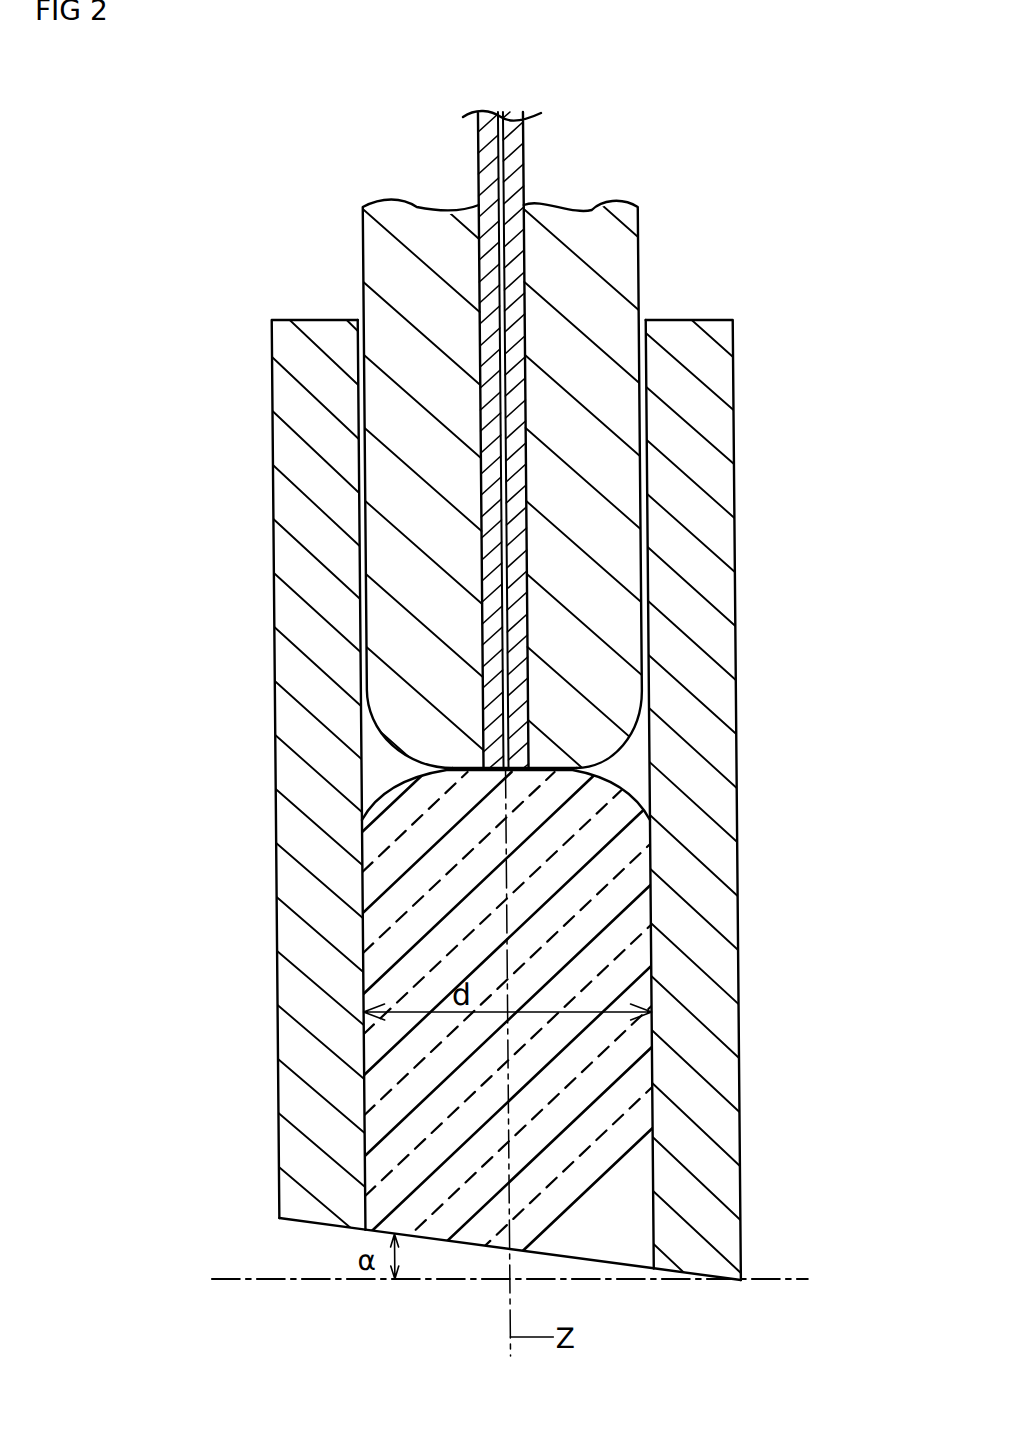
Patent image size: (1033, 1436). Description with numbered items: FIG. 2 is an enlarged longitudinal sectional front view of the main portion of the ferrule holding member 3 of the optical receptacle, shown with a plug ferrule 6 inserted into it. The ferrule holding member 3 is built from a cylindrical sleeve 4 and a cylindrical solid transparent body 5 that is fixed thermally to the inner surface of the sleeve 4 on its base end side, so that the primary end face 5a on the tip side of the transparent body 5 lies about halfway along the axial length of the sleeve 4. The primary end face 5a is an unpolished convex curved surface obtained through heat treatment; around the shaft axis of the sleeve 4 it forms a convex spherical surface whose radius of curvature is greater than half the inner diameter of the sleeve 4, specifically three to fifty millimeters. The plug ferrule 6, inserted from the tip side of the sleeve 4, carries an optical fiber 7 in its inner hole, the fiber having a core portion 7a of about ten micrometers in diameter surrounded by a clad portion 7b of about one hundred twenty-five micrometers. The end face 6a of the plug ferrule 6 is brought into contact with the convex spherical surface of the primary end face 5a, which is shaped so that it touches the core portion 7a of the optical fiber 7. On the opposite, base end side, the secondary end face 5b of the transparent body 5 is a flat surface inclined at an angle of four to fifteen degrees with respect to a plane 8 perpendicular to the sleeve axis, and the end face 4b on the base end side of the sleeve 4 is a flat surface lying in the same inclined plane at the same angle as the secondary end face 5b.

The ferrule holding member 3 is at (747, 486).
The sleeve 4 is at (698, 556).
The end face of the sleeve 4b is at (307, 1223).
The transparent body 5 is at (596, 978).
The primary end face 5a is at (547, 768).
The secondary end face 5b is at (441, 1242).
The plug ferrule 6 is at (413, 512).
The end face of the plug ferrule 6a is at (357, 810).
The optical fiber 7 is at (364, 439).
The core portion 7a is at (497, 583).
The clad portion 7b is at (502, 653).
The plane 8 is at (242, 1282).